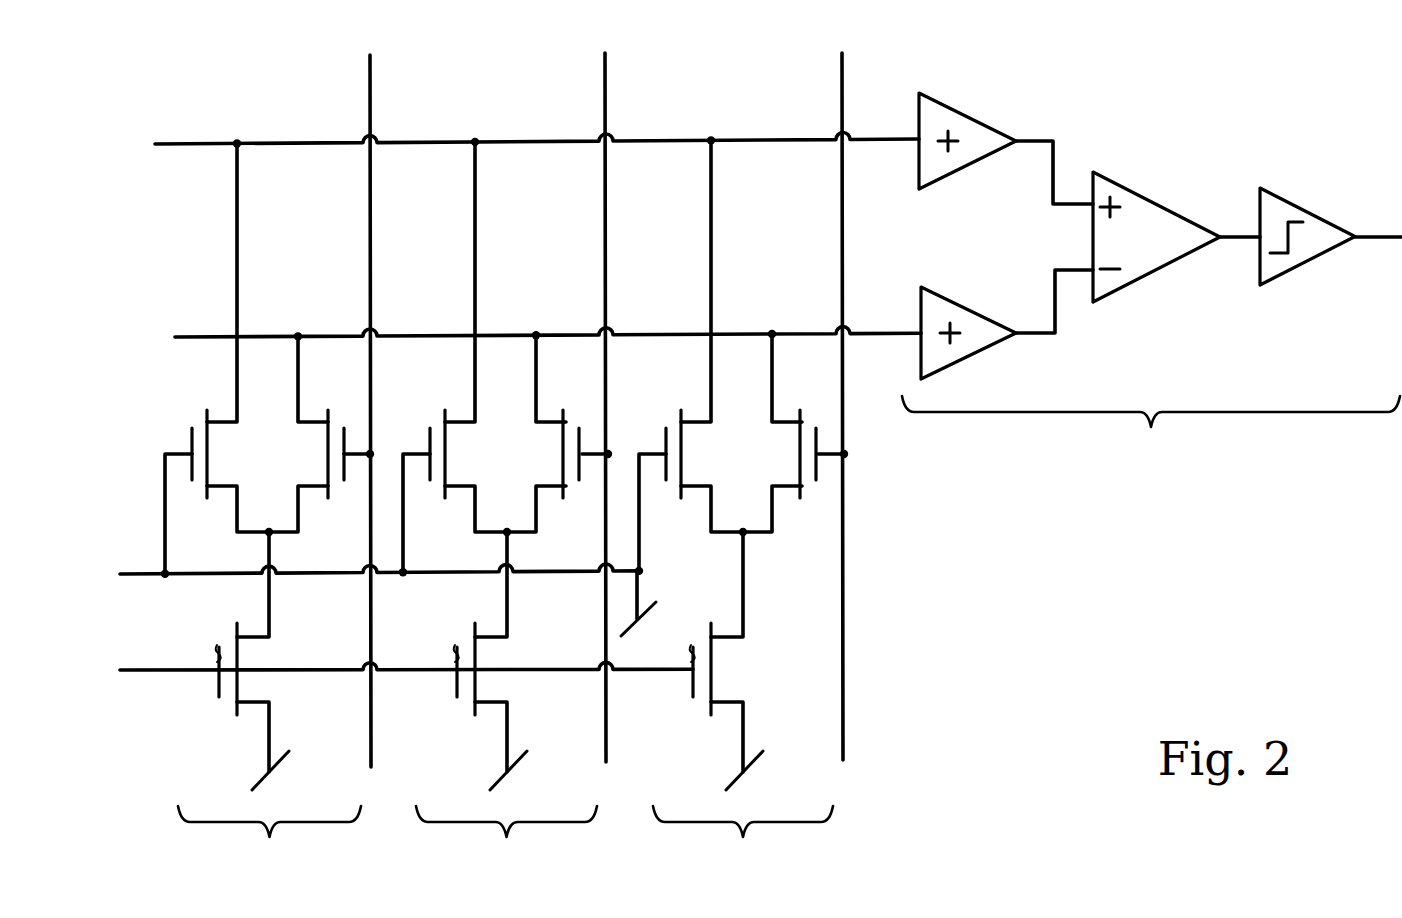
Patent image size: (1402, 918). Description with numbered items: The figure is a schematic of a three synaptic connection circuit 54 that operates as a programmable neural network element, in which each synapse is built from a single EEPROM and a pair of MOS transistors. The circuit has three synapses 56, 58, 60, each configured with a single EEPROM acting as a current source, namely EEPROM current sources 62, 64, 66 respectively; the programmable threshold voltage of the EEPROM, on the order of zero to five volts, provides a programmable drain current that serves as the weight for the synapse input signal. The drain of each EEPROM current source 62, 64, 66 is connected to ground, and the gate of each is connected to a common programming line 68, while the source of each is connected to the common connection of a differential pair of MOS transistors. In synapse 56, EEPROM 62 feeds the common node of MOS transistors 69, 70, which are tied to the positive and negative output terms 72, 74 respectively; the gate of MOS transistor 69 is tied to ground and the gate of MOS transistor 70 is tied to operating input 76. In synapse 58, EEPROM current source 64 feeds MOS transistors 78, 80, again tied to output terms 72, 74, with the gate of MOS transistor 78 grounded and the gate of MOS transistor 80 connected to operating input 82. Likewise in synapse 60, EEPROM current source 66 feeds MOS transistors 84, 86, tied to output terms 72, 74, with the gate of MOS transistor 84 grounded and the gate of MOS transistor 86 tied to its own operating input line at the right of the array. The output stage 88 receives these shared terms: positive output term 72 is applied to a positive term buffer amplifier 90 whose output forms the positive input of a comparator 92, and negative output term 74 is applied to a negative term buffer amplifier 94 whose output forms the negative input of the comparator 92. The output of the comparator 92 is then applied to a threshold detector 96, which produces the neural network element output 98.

The three synaptic connection circuit 54 is at (220, 77).
The positive output term 72 is at (274, 144).
The negative output term 74 is at (311, 334).
The operating input 76 is at (370, 108).
The operating input 82 is at (605, 104).
The MOS transistor 84 is at (838, 104).
The MOS transistor 69 is at (192, 436).
The MOS transistor 70 is at (346, 420).
The MOS transistor 78 is at (432, 426).
The MOS transistor 80 is at (581, 419).
The MOS transistor 86 is at (817, 420).
The EEPROM current source 62 is at (231, 634).
The EEPROM current source 64 is at (471, 634).
The EEPROM current source 66 is at (714, 622).
The programming line 68 is at (145, 668).
The synapse 56 is at (378, 507).
The synapse 58 is at (505, 505).
The synapse 60 is at (734, 504).
The output stage 88 is at (1151, 303).
The positive term buffer amplifier 90 is at (965, 112).
The comparator 92 is at (1155, 201).
The negative term buffer amplifier 94 is at (954, 300).
The threshold detector 96 is at (1310, 210).
The neural network element output 98 is at (1374, 246).